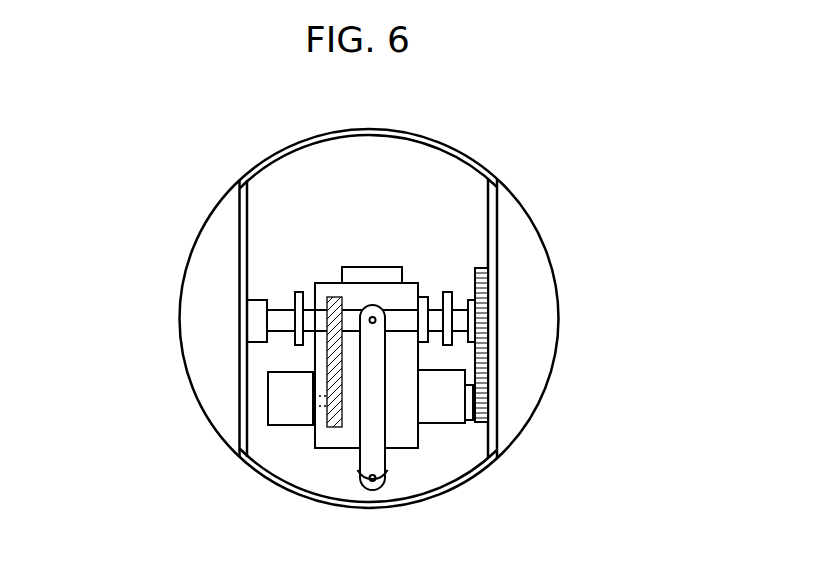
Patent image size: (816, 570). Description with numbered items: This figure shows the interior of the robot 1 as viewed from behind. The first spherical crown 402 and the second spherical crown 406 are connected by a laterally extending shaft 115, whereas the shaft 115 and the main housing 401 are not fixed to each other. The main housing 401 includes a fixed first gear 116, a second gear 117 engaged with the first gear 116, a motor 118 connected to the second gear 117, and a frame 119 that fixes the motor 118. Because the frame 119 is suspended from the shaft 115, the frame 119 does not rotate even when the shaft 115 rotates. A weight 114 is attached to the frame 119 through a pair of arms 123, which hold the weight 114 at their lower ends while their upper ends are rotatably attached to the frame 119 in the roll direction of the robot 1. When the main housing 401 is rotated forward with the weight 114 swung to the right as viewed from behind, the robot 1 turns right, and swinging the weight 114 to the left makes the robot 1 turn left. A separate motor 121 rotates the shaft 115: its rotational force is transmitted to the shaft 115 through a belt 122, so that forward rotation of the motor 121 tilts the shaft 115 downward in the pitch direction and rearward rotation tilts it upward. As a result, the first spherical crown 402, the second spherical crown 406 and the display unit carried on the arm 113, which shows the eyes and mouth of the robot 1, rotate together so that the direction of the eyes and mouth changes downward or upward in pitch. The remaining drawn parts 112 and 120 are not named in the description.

The robot 1 is at (534, 148).
The main housing 401 is at (443, 142).
The first spherical crown 402 is at (528, 207).
The second spherical crown 406 is at (206, 220).
The disc 112 is at (300, 302).
The arm 113 is at (447, 300).
The weight 114 is at (373, 480).
The shaft 115 is at (280, 318).
The first gear 116 is at (484, 310).
The second gear 117 is at (476, 423).
The motor 118 is at (443, 410).
The frame 119 is at (334, 297).
The housing 120 is at (367, 272).
The motor 121 is at (287, 399).
The belt 122 is at (329, 411).
The arms 123 is at (368, 430).